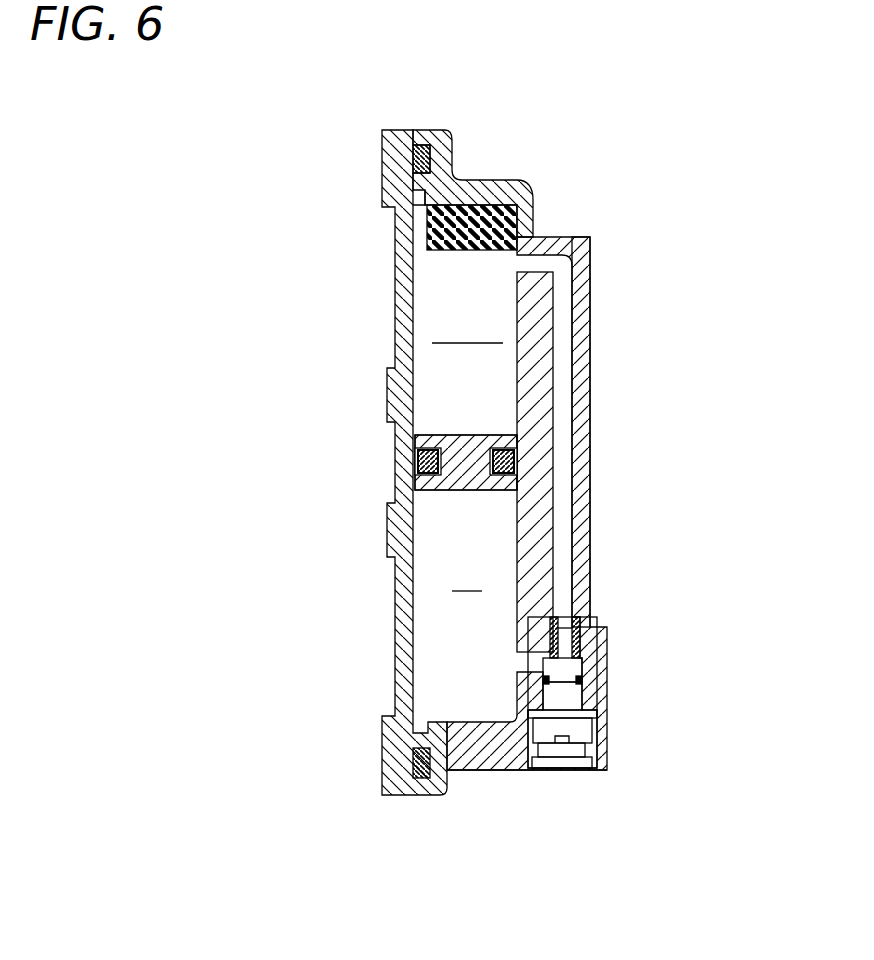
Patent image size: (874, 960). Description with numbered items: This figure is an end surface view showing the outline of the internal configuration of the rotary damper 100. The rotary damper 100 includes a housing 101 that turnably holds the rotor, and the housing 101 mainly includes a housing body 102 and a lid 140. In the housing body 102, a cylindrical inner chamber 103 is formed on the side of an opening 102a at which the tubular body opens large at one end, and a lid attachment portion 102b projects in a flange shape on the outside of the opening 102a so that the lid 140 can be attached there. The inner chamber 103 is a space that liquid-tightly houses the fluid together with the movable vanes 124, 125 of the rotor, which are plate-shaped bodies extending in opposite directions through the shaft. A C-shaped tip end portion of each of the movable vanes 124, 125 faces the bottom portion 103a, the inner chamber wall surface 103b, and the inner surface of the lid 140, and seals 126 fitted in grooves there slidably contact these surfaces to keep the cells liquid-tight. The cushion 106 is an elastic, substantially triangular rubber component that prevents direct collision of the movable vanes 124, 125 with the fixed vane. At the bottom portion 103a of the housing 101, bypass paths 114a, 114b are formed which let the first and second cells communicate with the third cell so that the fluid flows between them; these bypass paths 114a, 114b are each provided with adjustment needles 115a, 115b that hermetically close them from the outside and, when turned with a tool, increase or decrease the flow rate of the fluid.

The rotary damper 100 is at (296, 70).
The housing 101 is at (463, 64).
The lid 140 is at (403, 130).
The housing body 102 is at (428, 130).
The opening 102a is at (424, 205).
The lid attachment portion 102b is at (383, 137).
The inner chamber 103 is at (432, 300).
The bottom portion 103a is at (510, 348).
The inner chamber wall surface 103b is at (464, 722).
The cushion 106 is at (456, 254).
The bypass path 114a is at (572, 535).
The bypass path 114b is at (581, 432).
The adjustment needle 115a is at (570, 745).
The adjustment needle 115b is at (562, 692).
The movable vane 124 is at (470, 435).
The movable vane 125 is at (466, 462).
The seal 126 is at (517, 463).